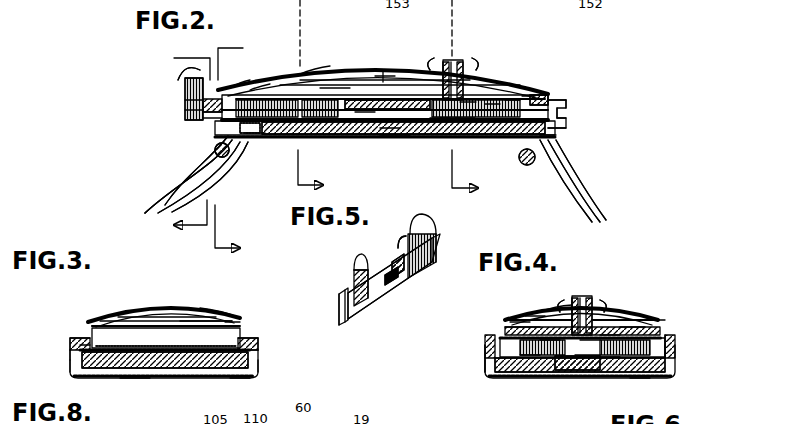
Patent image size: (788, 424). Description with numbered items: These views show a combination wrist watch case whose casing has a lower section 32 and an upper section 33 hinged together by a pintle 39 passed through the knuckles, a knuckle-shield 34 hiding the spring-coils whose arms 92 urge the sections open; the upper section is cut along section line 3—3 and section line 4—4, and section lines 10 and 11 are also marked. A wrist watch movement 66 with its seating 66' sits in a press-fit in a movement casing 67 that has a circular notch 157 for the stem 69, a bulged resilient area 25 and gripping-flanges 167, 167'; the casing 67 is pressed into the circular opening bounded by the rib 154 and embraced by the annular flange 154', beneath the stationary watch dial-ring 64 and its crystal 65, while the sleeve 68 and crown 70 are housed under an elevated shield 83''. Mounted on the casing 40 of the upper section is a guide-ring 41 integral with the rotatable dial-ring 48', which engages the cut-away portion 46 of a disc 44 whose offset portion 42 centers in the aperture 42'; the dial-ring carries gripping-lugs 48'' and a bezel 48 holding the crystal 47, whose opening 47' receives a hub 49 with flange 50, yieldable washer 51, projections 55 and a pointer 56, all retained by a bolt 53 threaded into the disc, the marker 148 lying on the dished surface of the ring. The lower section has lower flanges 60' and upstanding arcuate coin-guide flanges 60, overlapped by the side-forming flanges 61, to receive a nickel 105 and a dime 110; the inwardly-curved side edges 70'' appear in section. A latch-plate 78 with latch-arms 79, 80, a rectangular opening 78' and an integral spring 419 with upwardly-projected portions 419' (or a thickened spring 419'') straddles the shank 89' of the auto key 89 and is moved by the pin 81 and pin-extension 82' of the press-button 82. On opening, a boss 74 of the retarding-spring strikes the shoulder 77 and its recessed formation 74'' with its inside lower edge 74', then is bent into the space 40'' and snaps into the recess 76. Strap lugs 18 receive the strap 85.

In FIG. 2, the section line 10 is at (241, 148).
In FIG. 2, the section line 11 is at (183, 142).
In FIG. 2, the section line 3— 3 is at (318, 172).
In FIG. 2, the section line 4— 4 is at (474, 173).
In FIG. 2, the strap lug 18 is at (536, 153).
In FIG. 2, the bulged resilient area 25 is at (390, 129).
In FIG. 2, the lower section 32 is at (420, 132).
In FIG. 3, the lower section 32 is at (174, 377).
In FIG. 4, the lower section 32 is at (674, 370).
In FIG. 2, the upper section 33 is at (540, 95).
In FIG. 3, the upper section 33 is at (250, 343).
In FIG. 2, the knuckle-shield 34 is at (187, 110).
In FIG. 2, the pintle 39 is at (232, 132).
In FIG. 2, the casing 40 is at (192, 123).
In FIG. 2, the space 40'' is at (178, 134).
In FIG. 2, the guide-ring 41 is at (446, 120).
In FIG. 4, the guide-ring 41 is at (608, 366).
In FIG. 2, the downwardly-offset circular portion 42 is at (487, 164).
In FIG. 4, the downwardly-offset circular portion 42 is at (625, 373).
In FIG. 2, the circular aperture 42' is at (460, 140).
In FIG. 2, the disc 44 is at (480, 96).
In FIG. 4, the disc 44 is at (604, 338).
In FIG. 2, the cut-away portion 46 is at (510, 100).
In FIG. 4, the cut-away portion 46 is at (522, 321).
In FIG. 2, the crystal 47 is at (512, 62).
In FIG. 4, the crystal 47 is at (514, 300).
In FIG. 2, the central opening 47' is at (487, 57).
In FIG. 4, the central opening 47' is at (616, 298).
In FIG. 2, the bezel 48 is at (363, 74).
In FIG. 4, the bezel 48 is at (515, 316).
In FIG. 2, the dial-ring 48' is at (545, 68).
In FIG. 4, the dial-ring 48' is at (494, 315).
In FIG. 4, the gripping-lugs 48'' is at (680, 309).
In FIG. 2, the hub 49 is at (454, 114).
In FIG. 2, the flange 50 is at (456, 72).
In FIG. 4, the flange 50 is at (584, 298).
In FIG. 2, the yieldable washer 51 is at (445, 65).
In FIG. 4, the yieldable washer 51 is at (573, 302).
In FIG. 2, the bolt 53 is at (446, 122).
In FIG. 4, the bolt 53 is at (582, 356).
In FIG. 2, the radially-extending upward projections 55 is at (432, 64).
In FIG. 4, the radially-extending upward projections 55 is at (602, 302).
In FIG. 4, the hand or pointer 56 is at (547, 314).
In FIG. 4, the upstanding arcuate flanges 60 is at (590, 363).
In FIG. 3, the lower flanges 60' is at (166, 339).
In FIG. 4, the lower flanges 60' is at (468, 371).
In FIG. 3, the side-forming flanges 61 is at (258, 356).
In FIG. 4, the side-forming flanges 61 is at (673, 355).
In FIG. 2, the watch dial-ring 64 is at (238, 88).
In FIG. 3, the watch dial-ring 64 is at (236, 326).
In FIG. 2, the crystal 65 is at (315, 70).
In FIG. 3, the crystal 65 is at (223, 312).
In FIG. 2, the wrist watch movement 66 is at (357, 141).
In FIG. 3, the wrist watch movement 66 is at (132, 388).
In FIG. 2, the movement seating 66' is at (339, 45).
In FIG. 3, the movement seating 66' is at (206, 303).
In FIG. 2, the movement casing 67 is at (395, 130).
In FIG. 3, the movement casing 67 is at (190, 352).
In FIG. 2, the sleeve 68 is at (258, 90).
In FIG. 2, the stem 69 is at (185, 94).
In FIG. 2, the crown 70 is at (172, 100).
In FIG. 3, the inwardly-curved lower side walls 70'' is at (38, 340).
In FIG. 2, the boss 74 is at (199, 170).
In FIG. 2, the inside lower edge 74' is at (190, 170).
In FIG. 2, the recessed formation 74'' is at (188, 177).
In FIG. 2, the recess 76 is at (211, 131).
In FIG. 2, the shoulder 77 is at (224, 157).
In FIG. 2, the latch-plate 78 is at (619, 154).
In FIG. 5, the latch-plate 78 is at (370, 255).
In FIG. 5, the rectangular opening 78' is at (424, 285).
In FIG. 5, the latch-arm 79 is at (354, 276).
In FIG. 5, the latch-arm 80 is at (406, 250).
In FIG. 2, the rectangularly-shaped pin 81 is at (562, 117).
In FIG. 2, the press-button 82 is at (597, 94).
In FIG. 2, the pin-extension 82' is at (577, 74).
In FIG. 2, the elevated shield 83'' is at (184, 78).
In FIG. 2, the strap 85 is at (584, 208).
In FIG. 2, the auto key 89 is at (287, 149).
In FIG. 3, the auto key 89 is at (254, 389).
In FIG. 2, the shank 89' is at (589, 162).
In FIG. 4, the shank 89' is at (577, 383).
In FIG. 3, the arms 92 is at (86, 336).
In FIG. 2, the nickel 105 is at (482, 140).
In FIG. 4, the nickel 105 is at (530, 356).
In FIG. 2, the dime 110 is at (517, 150).
In FIG. 4, the dime 110 is at (552, 345).
In FIG. 4, the registering-plate or marker 148 is at (634, 327).
In FIG. 2, the circular rib 154 is at (363, 57).
In FIG. 3, the circular rib 154 is at (114, 302).
In FIG. 2, the annular flange 154' is at (413, 139).
In FIG. 4, the circular notch 157 is at (645, 400).
In FIG. 3, the gripping-flange 167 is at (279, 343).
In FIG. 3, the gripping-flange 167' is at (67, 332).
In FIG. 5, the spring 419 is at (392, 291).
In FIG. 5, the upwardly-projected portions 419' is at (377, 268).
In FIG. 2, the thickened spring 419'' is at (614, 87).